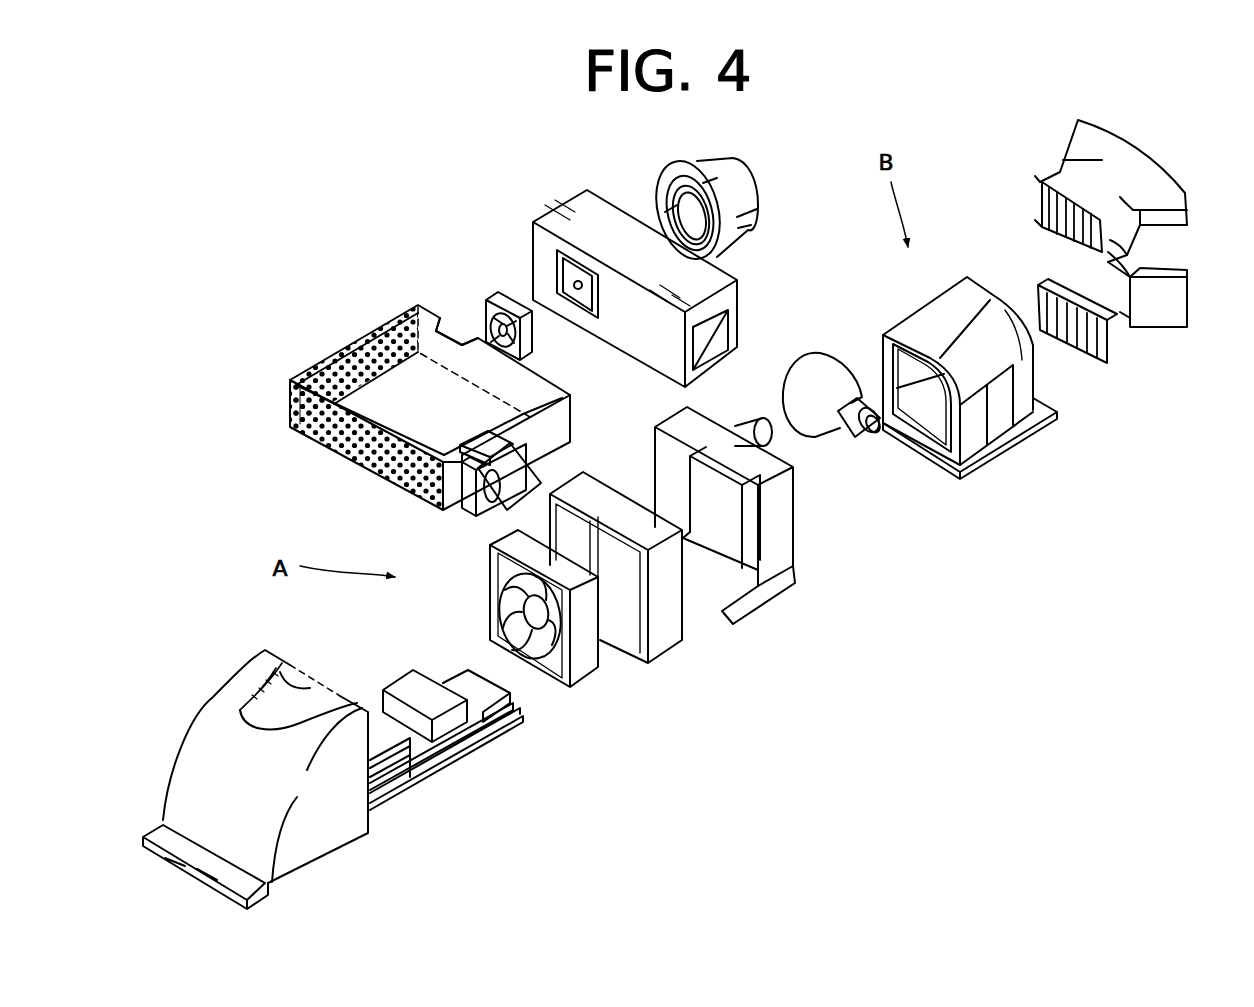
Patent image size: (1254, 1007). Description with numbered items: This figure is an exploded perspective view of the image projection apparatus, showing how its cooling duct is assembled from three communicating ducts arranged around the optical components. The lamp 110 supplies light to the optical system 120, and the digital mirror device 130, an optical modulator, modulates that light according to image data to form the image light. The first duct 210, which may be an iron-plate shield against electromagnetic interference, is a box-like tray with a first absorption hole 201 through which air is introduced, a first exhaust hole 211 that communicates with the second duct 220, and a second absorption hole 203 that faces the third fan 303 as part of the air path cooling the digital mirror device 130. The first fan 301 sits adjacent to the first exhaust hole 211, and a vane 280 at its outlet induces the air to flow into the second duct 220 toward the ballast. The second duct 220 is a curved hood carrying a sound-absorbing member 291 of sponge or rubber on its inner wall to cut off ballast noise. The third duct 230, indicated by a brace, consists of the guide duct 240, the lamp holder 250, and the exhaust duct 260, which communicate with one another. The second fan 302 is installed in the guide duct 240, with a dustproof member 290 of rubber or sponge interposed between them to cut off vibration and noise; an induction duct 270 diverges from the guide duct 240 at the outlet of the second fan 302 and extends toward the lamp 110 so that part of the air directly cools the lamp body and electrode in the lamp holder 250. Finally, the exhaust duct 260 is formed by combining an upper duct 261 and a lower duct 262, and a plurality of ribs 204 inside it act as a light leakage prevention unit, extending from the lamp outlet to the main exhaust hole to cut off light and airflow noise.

The lamp 110 is at (829, 360).
The optical system 120 is at (605, 214).
The digital mirror device (DMD) 130 is at (574, 285).
The first absorption hole 201 is at (323, 432).
The second absorption hole 203 is at (392, 324).
The ribs 204 is at (1133, 238).
The first duct 210 is at (338, 352).
The first exhaust hole 211 is at (470, 440).
The second duct 220 is at (335, 842).
The third duct 230 is at (1010, 570).
The guide duct 240 is at (772, 575).
The lamp holder 250 is at (1013, 437).
The exhaust duct 260 is at (1141, 268).
The upper duct 261 is at (1167, 217).
The lower duct 262 is at (1153, 313).
The induction duct 270 is at (755, 422).
The vane 280 is at (530, 470).
The dustproof member 290 is at (668, 652).
The sound-absorbing member 291 is at (313, 683).
The first fan 301 is at (462, 515).
The second fan 302 is at (587, 670).
The third fan 303 is at (500, 294).